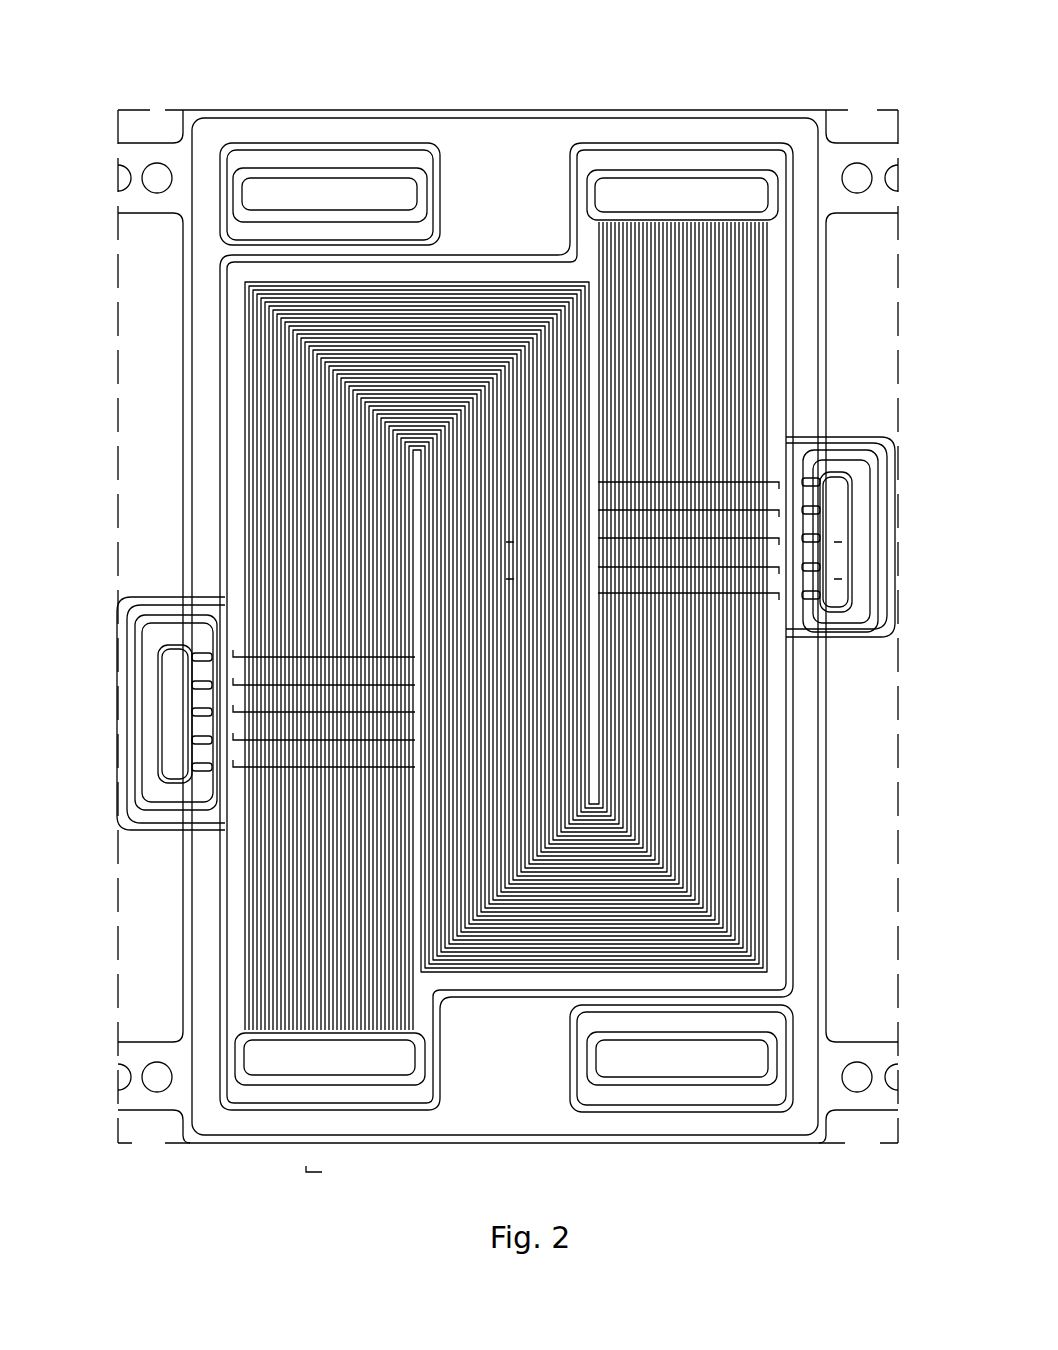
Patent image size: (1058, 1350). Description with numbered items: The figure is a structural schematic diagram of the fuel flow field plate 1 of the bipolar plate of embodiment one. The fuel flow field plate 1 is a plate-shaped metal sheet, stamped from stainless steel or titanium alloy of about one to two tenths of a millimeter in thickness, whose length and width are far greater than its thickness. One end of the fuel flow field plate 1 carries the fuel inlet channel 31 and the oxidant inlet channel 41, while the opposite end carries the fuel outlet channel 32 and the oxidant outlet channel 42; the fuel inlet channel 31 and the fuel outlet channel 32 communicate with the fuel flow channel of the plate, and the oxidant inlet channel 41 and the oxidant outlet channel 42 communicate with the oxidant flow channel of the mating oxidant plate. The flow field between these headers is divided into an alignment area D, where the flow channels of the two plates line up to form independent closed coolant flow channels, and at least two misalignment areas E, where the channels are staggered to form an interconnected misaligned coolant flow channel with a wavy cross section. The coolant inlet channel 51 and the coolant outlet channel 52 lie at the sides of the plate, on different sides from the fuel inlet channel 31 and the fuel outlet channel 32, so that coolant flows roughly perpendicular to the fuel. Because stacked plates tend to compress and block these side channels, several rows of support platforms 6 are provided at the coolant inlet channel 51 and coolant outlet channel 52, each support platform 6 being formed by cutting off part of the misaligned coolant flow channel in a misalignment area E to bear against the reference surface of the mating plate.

The fuel flow field plate 1 is at (503, 152).
The oxidant inlet channel 41 is at (325, 192).
The fuel inlet channel 31 is at (663, 194).
The fuel outlet channel 32 is at (353, 1058).
The oxidant outlet channel 42 is at (653, 1061).
The coolant inlet channel 51 is at (840, 488).
The coolant outlet channel 52 is at (172, 677).
The support platform 6 is at (760, 578).
The alignment area D is at (460, 547).
The misalignment area E is at (718, 603).